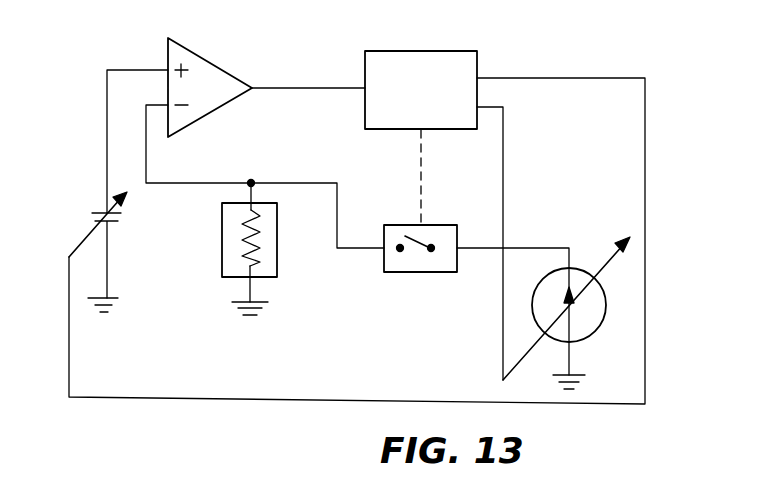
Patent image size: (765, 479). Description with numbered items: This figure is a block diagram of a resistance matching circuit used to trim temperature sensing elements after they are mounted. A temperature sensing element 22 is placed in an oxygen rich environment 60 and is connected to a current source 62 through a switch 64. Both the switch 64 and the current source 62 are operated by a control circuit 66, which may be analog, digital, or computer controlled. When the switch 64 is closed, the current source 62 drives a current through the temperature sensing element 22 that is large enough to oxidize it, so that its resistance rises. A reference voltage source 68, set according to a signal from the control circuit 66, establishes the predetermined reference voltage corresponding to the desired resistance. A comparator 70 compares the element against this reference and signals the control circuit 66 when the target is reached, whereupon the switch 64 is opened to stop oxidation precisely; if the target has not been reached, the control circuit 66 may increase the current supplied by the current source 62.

The temperature sensing element 22 is at (248, 246).
The oxygen rich environment 60 is at (277, 255).
The current source 62 is at (606, 303).
The switch 64 is at (437, 224).
The control circuit 66 is at (477, 64).
The reference voltage source 68 is at (107, 213).
The comparator 70 is at (200, 56).